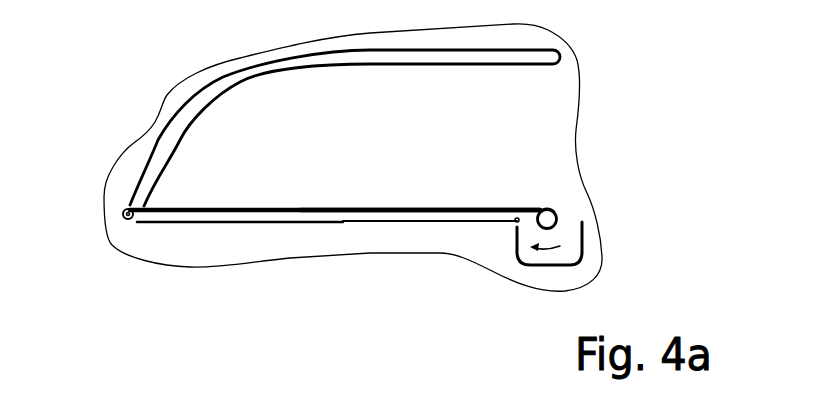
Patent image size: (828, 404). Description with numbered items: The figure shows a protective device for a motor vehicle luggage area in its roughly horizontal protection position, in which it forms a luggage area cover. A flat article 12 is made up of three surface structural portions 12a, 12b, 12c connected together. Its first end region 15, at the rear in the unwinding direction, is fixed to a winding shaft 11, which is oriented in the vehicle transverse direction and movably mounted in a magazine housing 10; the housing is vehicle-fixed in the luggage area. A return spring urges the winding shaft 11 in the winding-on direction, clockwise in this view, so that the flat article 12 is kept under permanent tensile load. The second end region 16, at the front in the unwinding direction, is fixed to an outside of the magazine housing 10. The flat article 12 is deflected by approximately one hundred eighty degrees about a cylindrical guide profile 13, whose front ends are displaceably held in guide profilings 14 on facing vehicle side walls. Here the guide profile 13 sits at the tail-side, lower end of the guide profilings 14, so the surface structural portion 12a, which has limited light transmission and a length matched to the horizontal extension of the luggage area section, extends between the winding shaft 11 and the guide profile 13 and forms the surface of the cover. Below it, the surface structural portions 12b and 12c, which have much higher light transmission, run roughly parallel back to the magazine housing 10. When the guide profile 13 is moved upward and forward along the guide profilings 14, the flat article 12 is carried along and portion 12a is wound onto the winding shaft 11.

The magazine housing 10 is at (577, 262).
The winding shaft 11 is at (557, 217).
The flat article 12 is at (340, 195).
The surface structural portion 12a is at (408, 208).
The surface structural portion 12b is at (258, 223).
The surface structural portion 12c is at (412, 221).
The guide profile 13 is at (123, 213).
The guide profilings 14 is at (263, 78).
The first end region 15 is at (550, 205).
The second end region 16 is at (513, 227).